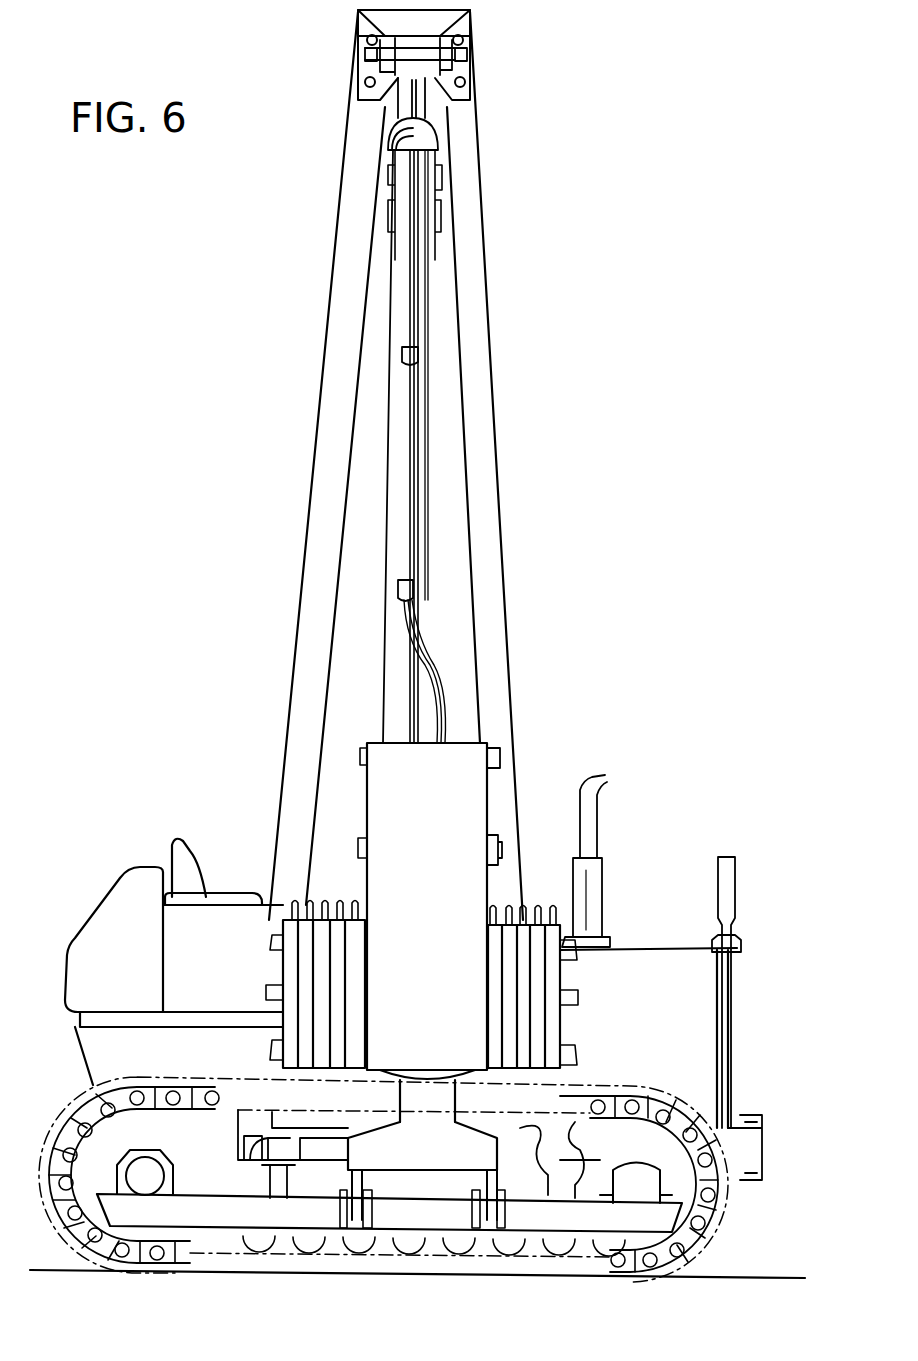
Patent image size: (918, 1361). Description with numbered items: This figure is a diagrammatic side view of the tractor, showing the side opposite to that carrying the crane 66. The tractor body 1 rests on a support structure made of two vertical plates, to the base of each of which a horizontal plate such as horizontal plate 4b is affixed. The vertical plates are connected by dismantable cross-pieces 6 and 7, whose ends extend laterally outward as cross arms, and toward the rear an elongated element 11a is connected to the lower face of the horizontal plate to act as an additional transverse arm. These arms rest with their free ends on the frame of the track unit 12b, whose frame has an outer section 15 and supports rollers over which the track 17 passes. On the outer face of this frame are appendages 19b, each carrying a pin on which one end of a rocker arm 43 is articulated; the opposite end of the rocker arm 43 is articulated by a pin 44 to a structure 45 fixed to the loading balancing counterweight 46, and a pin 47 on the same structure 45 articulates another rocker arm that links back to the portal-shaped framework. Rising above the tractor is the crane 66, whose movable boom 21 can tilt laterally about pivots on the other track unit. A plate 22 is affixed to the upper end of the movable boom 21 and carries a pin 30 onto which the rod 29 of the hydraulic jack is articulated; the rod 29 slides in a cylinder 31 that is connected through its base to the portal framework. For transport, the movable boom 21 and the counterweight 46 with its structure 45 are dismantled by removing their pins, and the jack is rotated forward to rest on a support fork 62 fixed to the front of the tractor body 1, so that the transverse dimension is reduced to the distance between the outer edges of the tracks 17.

The tractor body 1 is at (262, 406).
The horizontal plate 4b is at (245, 1128).
The dismantable cross-piece 6 is at (507, 1175).
The dismantable cross-piece 7 is at (385, 1188).
The elongated element 11a is at (262, 1172).
The track unit 12b is at (661, 1094).
The outer section 15 is at (297, 1183).
The track 17 is at (100, 1118).
The appendage 19b is at (310, 1210).
The movable boom 21 is at (315, 578).
The plate 22 is at (385, 42).
The rod 29 is at (420, 104).
The pin 30 is at (368, 60).
The cylinder 31 is at (413, 535).
The rocker arm 43 is at (440, 1097).
The pin 44 is at (498, 850).
The structure 45 is at (392, 812).
The loading balancing counterweight 46 is at (340, 972).
The pin 47 is at (500, 760).
The support fork 62 is at (712, 893).
The crane 66 is at (392, 161).